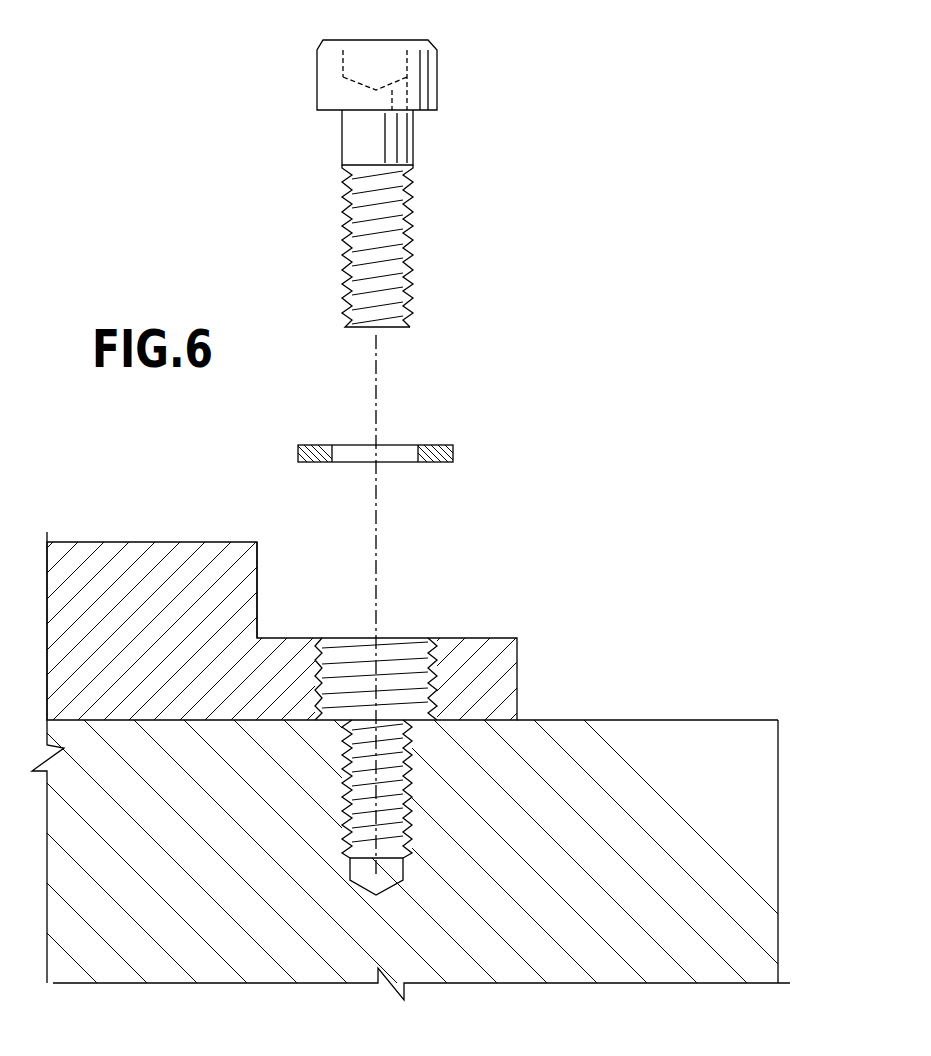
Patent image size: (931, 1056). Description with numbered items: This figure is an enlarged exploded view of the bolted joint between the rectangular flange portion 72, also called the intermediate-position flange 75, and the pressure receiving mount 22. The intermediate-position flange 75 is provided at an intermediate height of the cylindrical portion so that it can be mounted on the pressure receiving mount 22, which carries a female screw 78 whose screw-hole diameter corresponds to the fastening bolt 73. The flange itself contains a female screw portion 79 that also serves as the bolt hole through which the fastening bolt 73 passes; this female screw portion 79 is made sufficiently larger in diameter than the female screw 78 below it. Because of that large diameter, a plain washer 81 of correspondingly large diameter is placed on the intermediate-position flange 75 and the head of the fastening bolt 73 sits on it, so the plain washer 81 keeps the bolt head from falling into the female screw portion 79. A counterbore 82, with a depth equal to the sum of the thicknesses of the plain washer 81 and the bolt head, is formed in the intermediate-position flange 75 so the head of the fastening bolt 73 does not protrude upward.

The fastening bolt 73 is at (403, 137).
The plain washer 81 is at (435, 445).
The counterbore 82 is at (258, 565).
The female screw portion 79 is at (412, 638).
The rectangular flange portion 72 is at (344, 631).
The intermediate-position flange 75 is at (485, 673).
The pressure receiving mount 22 is at (695, 760).
The female screw 78 is at (402, 787).